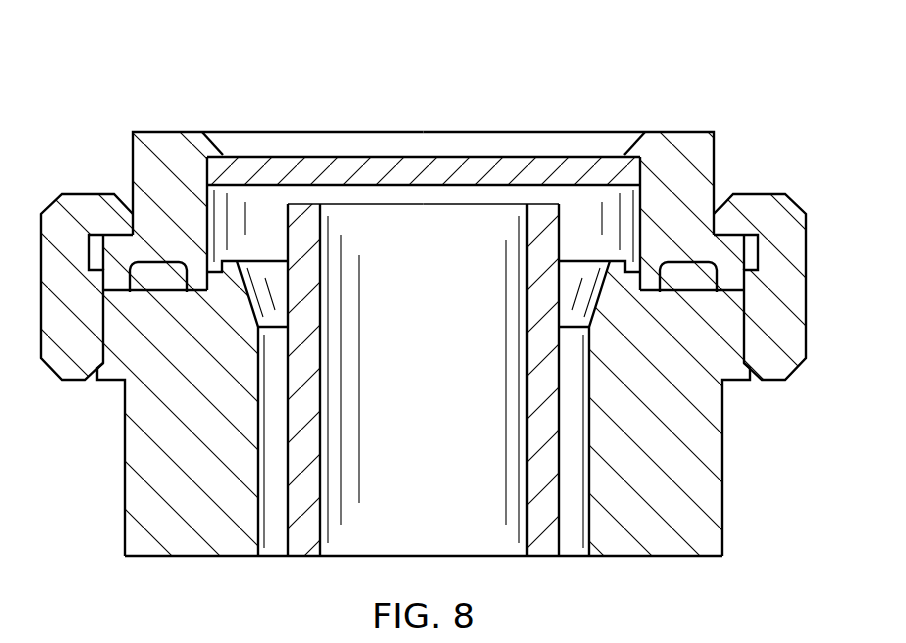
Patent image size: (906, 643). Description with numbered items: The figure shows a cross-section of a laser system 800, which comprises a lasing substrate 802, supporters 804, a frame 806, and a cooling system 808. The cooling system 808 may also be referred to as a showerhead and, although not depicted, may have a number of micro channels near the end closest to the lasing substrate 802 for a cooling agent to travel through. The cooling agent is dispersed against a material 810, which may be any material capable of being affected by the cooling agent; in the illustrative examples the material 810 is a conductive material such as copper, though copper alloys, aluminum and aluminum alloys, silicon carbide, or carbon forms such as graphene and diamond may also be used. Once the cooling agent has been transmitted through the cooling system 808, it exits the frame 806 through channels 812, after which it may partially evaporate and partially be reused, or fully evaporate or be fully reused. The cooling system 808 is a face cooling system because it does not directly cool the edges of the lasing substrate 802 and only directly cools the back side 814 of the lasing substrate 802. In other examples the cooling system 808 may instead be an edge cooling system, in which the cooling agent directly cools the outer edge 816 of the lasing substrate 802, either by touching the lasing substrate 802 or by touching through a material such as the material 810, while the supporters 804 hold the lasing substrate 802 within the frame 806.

The laser system 800 is at (607, 66).
The lasing substrate 802 is at (338, 140).
The supporters 804 is at (141, 167).
The frame 806 is at (131, 494).
The cooling system 808 is at (443, 373).
The material 810 is at (481, 166).
The channels 812 is at (275, 548).
The back side 814 is at (390, 155).
The outer edge 816 is at (221, 150).